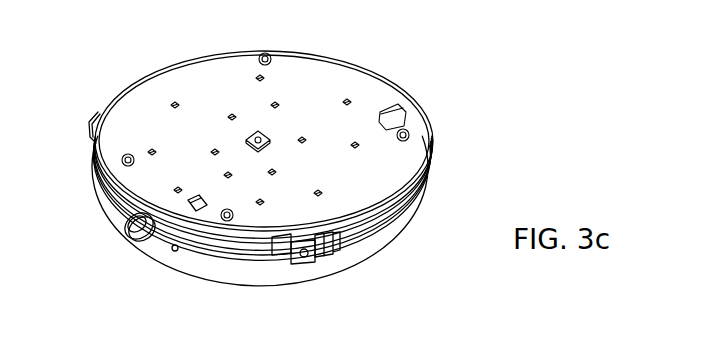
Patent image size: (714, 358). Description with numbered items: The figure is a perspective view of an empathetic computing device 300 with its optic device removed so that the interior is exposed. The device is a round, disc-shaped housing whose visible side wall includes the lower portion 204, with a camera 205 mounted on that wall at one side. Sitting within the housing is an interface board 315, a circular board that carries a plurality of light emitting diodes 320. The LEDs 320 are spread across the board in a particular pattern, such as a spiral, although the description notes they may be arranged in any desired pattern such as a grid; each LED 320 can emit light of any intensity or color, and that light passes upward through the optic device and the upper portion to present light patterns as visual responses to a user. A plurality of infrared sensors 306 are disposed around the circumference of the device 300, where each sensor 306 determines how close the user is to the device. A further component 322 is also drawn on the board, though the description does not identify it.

The empathetic computing device 300 is at (437, 82).
The lower portion 204 is at (395, 236).
The camera 205 is at (127, 226).
The infrared sensors 306 is at (92, 135).
The interface board 315 is at (373, 172).
The light emitting diodes (LEDs) 320 is at (257, 131).
The connector 322 is at (206, 205).